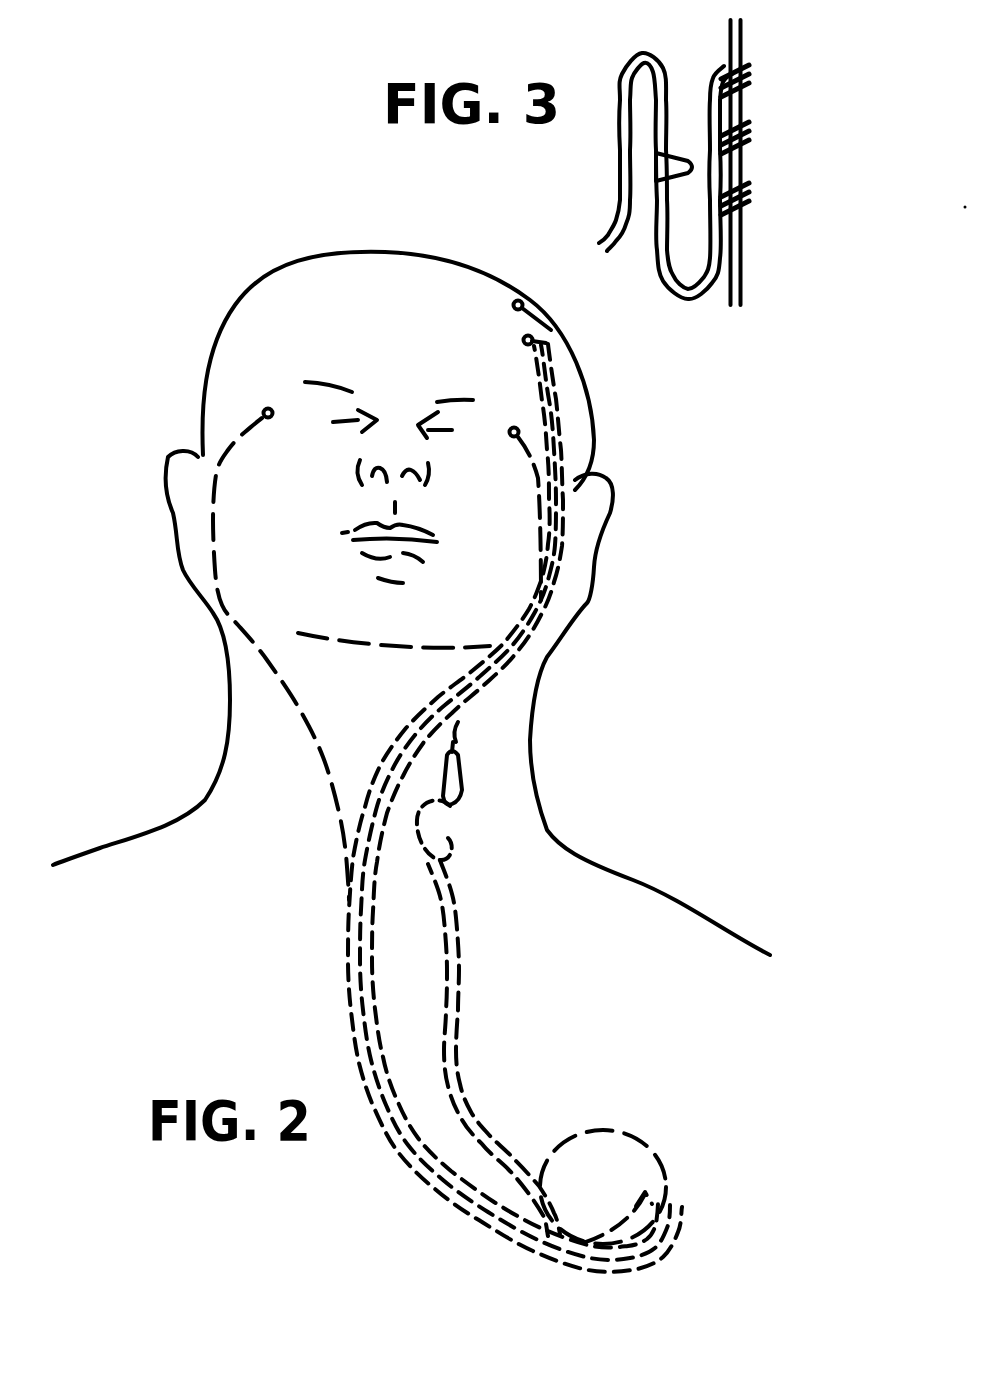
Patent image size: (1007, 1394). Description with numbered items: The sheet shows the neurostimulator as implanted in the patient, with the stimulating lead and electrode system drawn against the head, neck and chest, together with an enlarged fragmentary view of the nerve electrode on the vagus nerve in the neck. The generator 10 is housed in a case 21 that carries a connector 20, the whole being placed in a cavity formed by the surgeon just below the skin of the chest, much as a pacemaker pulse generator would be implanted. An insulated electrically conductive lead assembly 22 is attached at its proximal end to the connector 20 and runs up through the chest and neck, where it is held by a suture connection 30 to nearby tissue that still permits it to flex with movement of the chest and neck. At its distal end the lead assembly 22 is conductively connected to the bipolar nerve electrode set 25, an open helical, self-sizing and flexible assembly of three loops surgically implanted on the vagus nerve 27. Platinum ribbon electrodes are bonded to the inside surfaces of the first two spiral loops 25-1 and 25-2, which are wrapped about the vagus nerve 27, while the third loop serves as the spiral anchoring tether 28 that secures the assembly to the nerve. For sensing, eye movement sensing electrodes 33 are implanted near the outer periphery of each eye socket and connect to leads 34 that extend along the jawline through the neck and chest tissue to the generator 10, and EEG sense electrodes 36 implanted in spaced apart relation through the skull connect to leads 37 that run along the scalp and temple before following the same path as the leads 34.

In FIG. 2, the generator 10 is at (583, 1145).
In FIG. 2, the connector 20 is at (643, 1150).
In FIG. 2, the case 21 is at (556, 1162).
In FIG. 3, the lead assembly 22 is at (691, 296).
In FIG. 2, the lead assembly 22 is at (453, 838).
In FIG. 2, the nerve electrode set 25 is at (463, 773).
In FIG. 3, the first spiral loop 25-1 is at (748, 73).
In FIG. 3, the second spiral loop 25-2 is at (750, 130).
In FIG. 3, the vagus nerve 27 is at (748, 36).
In FIG. 2, the vagus nerve 27 is at (467, 732).
In FIG. 3, the spiral anchoring tether 28 is at (718, 200).
In FIG. 3, the suture connection 30 is at (676, 163).
In FIG. 2, the eye movement sensing electrodes 33 is at (266, 412).
In FIG. 2, the leads 34 is at (225, 628).
In FIG. 2, the EEG sense electrodes 36 is at (542, 302).
In FIG. 2, the leads 37 is at (589, 390).